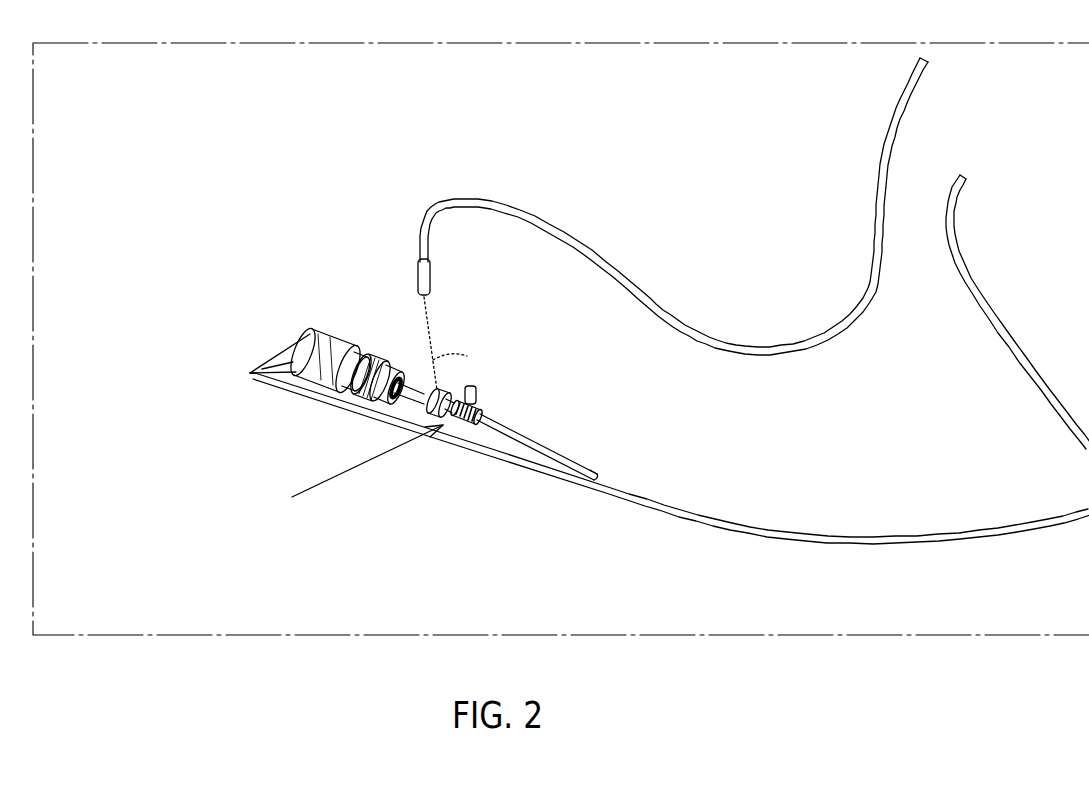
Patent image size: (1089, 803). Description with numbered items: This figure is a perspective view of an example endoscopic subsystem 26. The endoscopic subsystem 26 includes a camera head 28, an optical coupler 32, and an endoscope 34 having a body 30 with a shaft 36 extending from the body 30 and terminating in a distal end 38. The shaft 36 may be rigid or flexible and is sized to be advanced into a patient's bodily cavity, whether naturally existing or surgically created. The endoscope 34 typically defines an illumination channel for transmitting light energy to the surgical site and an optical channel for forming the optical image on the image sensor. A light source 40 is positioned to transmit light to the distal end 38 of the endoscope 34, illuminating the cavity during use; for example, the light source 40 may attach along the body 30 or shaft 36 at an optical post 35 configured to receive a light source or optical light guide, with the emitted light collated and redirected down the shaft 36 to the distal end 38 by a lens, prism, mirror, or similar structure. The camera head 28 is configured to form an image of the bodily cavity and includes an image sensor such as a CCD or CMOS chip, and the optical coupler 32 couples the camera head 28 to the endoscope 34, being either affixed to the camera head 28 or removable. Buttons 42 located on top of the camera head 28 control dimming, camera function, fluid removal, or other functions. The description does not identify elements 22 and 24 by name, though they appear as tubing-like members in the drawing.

The first tube 22 is at (632, 275).
The second tube 24 is at (540, 470).
The endoscopic subsystem 26 is at (561, 339).
The camera head 28 is at (305, 350).
The body 30 is at (405, 385).
The optical coupler 32 is at (388, 363).
The endoscope 34 is at (350, 472).
The optical post 35 is at (472, 390).
The shaft 36 is at (517, 445).
The distal end 38 is at (586, 468).
The light source 40 is at (430, 280).
The buttons 42 is at (355, 345).